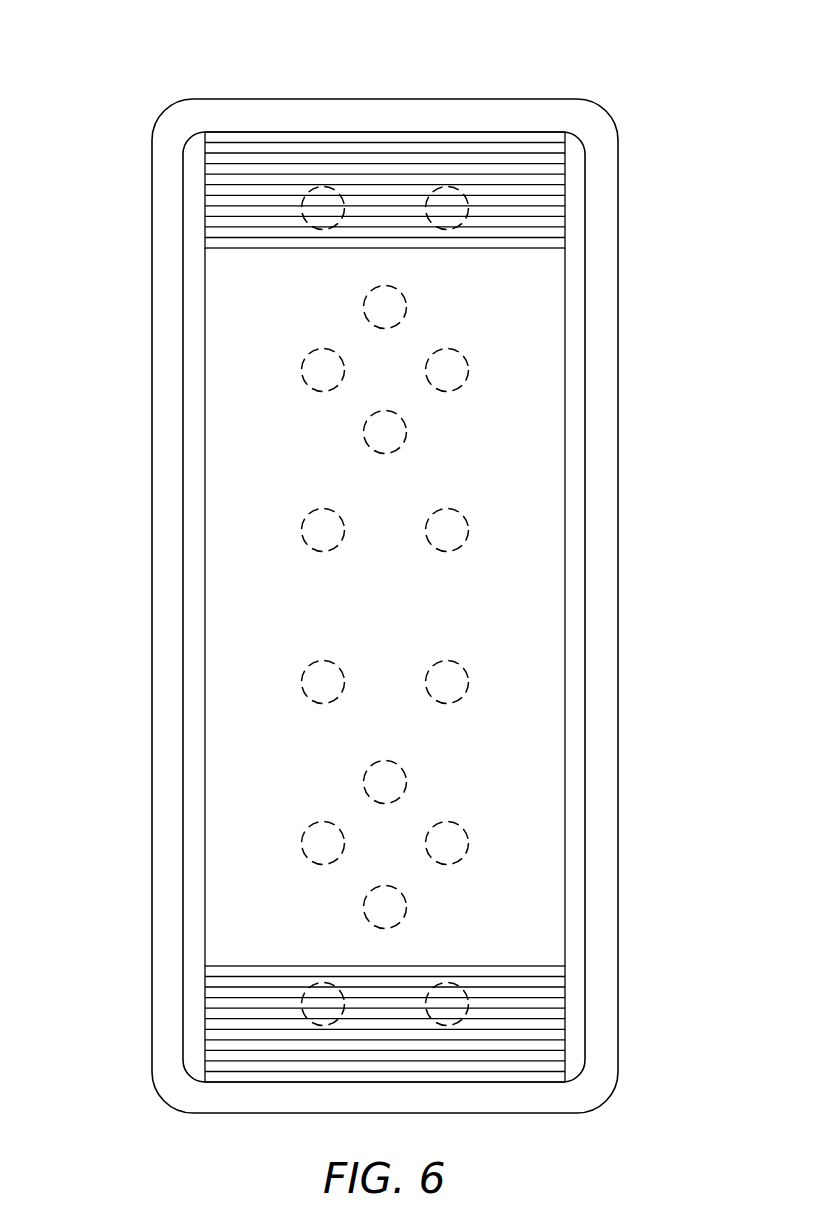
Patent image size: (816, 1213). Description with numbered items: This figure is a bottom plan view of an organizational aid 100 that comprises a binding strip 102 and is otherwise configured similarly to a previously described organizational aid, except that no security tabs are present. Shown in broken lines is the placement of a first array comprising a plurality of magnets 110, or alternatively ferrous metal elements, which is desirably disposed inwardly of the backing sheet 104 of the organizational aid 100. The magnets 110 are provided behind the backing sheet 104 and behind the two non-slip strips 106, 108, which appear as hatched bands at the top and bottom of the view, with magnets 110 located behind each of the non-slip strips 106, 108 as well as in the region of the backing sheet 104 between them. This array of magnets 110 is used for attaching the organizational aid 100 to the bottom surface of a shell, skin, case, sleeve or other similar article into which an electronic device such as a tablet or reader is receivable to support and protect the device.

The organizational aid 100 is at (607, 70).
The binding strip 102 is at (162, 505).
The backing sheet 104 is at (217, 633).
The non-slip strip 106 is at (257, 248).
The non-slip strip 108 is at (243, 965).
The magnets 110 is at (405, 303).